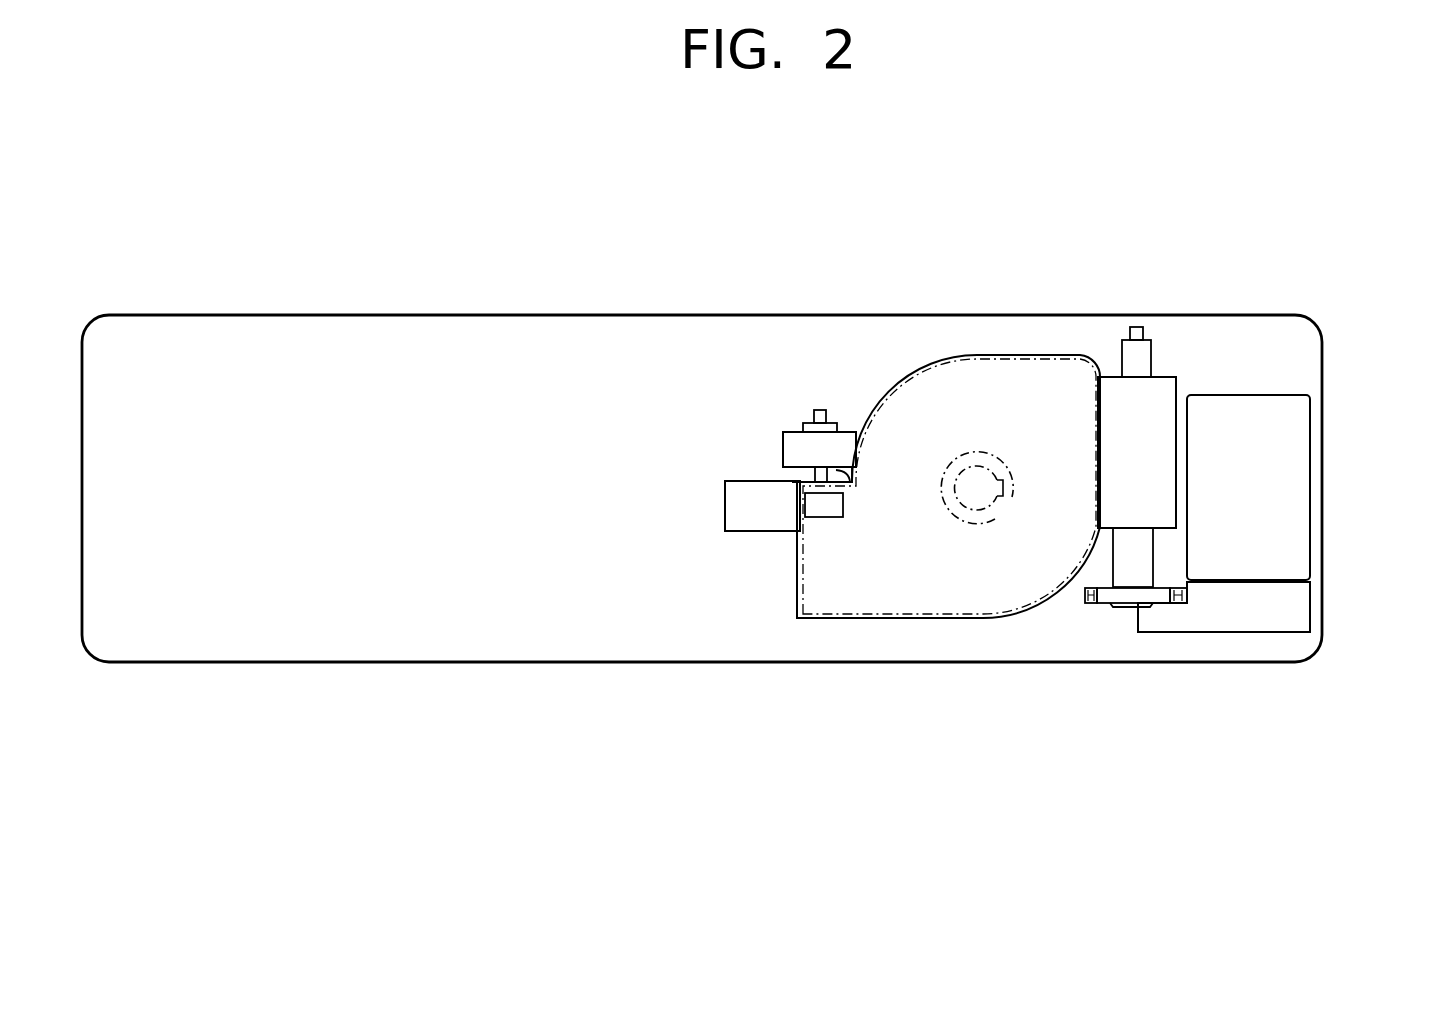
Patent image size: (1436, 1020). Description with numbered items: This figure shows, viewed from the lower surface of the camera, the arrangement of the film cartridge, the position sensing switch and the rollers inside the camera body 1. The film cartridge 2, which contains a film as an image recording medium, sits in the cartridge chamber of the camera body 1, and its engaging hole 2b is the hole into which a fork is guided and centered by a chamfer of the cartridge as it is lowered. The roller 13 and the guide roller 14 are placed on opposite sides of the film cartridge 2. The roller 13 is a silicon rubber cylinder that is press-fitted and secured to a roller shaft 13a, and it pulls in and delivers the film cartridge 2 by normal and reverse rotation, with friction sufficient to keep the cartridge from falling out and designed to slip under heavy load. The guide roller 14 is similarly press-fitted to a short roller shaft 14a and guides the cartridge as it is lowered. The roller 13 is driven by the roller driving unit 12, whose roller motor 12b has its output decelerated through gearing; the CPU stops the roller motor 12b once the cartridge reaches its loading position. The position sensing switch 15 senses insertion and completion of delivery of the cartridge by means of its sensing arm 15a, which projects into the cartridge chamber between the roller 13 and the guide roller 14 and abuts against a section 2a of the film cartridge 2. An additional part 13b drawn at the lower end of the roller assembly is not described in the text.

The camera body 1 is at (695, 315).
The film cartridge 2 is at (952, 618).
The section of the film cartridge 2a is at (838, 605).
The engaging hole 2b is at (1001, 515).
The roller driving unit 12 is at (1253, 632).
The roller motor 12b is at (1295, 485).
The roller 13 is at (1173, 377).
The roller shaft 13a is at (1143, 327).
The lower bracket 13b is at (1082, 603).
The guide roller 14 is at (783, 437).
The short roller shaft 14a is at (818, 410).
The position sensing switch 15 is at (725, 493).
The sensing arm 15a is at (819, 505).